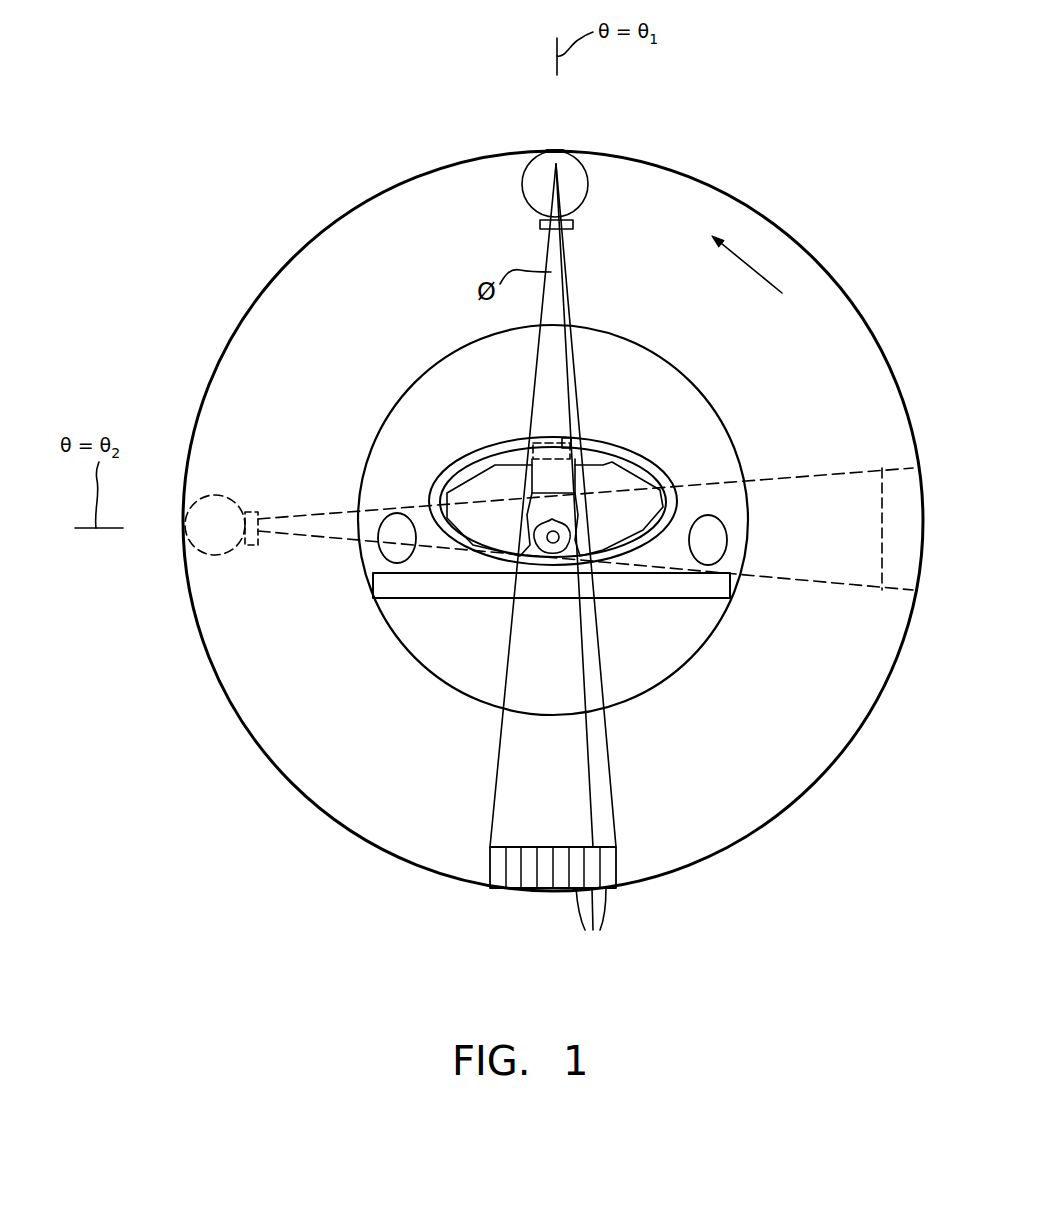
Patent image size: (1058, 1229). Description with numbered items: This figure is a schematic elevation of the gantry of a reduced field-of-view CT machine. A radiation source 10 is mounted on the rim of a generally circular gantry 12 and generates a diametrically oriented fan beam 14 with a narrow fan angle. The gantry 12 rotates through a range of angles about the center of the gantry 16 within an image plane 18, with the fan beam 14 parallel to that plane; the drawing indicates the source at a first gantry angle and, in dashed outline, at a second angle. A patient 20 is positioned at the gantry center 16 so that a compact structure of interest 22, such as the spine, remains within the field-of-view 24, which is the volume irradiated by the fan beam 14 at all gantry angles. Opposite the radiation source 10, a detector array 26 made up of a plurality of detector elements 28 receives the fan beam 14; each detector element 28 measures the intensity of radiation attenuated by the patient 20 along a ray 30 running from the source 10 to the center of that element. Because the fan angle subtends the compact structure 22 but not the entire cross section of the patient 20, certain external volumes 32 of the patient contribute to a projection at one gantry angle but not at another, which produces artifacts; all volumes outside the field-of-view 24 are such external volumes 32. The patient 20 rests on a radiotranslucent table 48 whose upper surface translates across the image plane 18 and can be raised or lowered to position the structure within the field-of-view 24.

The radiation source 10 is at (572, 168).
The gantry 12 is at (718, 200).
The fan beam 14 is at (568, 292).
The center of the gantry 16 is at (553, 545).
The image plane 18 is at (899, 223).
The patient 20 is at (652, 467).
The compact structure of interest 22 is at (537, 549).
The field-of-view 24 is at (532, 512).
The detector array 26 is at (629, 865).
The detector elements 28 is at (590, 925).
The ray 30 is at (592, 791).
The external volumes 32 is at (568, 446).
The table 48 is at (718, 592).